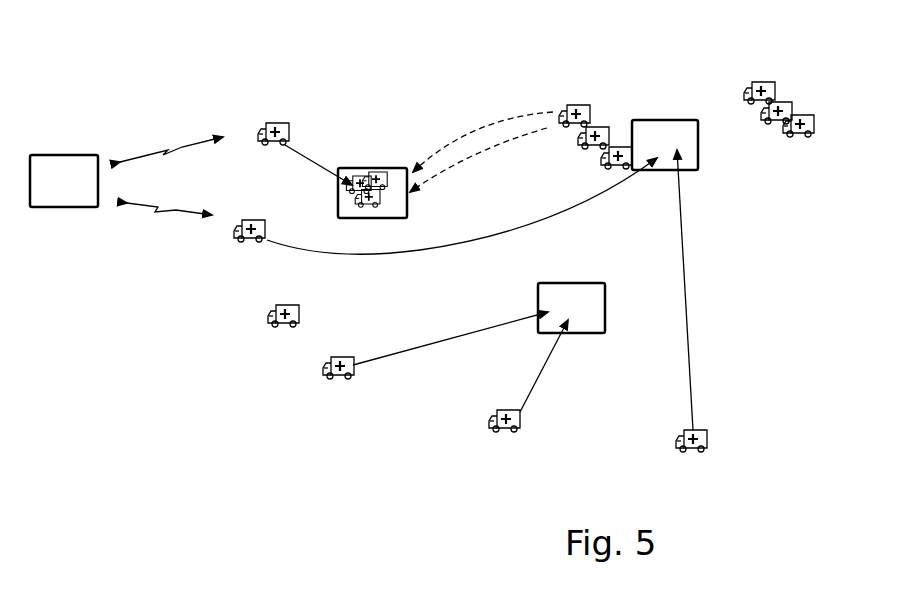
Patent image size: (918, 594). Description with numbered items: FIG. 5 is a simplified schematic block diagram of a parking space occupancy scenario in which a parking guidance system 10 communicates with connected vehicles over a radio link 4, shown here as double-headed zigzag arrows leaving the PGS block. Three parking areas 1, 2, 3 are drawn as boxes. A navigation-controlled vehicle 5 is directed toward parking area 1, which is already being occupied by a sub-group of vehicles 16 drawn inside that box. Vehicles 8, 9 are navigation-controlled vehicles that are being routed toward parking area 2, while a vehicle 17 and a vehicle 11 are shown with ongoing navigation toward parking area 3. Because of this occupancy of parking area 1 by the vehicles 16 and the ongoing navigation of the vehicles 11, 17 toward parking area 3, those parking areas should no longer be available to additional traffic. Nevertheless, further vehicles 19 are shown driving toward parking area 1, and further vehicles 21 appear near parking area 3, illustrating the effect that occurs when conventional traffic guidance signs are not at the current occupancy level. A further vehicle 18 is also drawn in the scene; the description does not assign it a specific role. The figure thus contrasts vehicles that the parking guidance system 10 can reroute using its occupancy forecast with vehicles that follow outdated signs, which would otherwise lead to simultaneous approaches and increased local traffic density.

The parking guidance system 10 is at (76, 155).
The radio link 4 is at (190, 142).
The vehicle 5 is at (272, 122).
The parking area 1 is at (365, 168).
The sub-group of vehicles 16 is at (383, 170).
The further vehicles 19 is at (580, 104).
The parking area 3 is at (665, 120).
The further vehicles 21 is at (780, 104).
The vehicle 17 is at (251, 244).
The ambulance vehicle 18 is at (284, 328).
The parking area 2 is at (591, 334).
The vehicle 8 is at (338, 384).
The vehicle 9 is at (503, 437).
The vehicle 11 is at (694, 455).